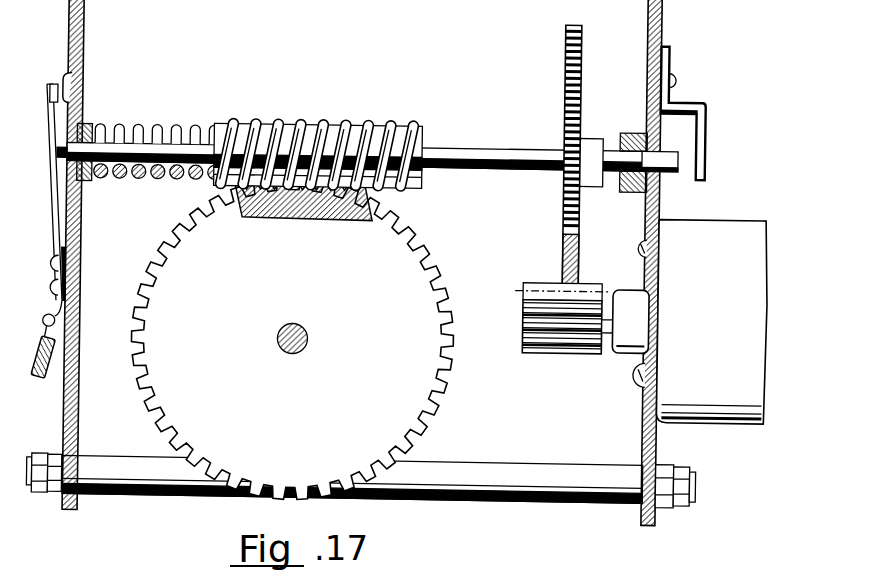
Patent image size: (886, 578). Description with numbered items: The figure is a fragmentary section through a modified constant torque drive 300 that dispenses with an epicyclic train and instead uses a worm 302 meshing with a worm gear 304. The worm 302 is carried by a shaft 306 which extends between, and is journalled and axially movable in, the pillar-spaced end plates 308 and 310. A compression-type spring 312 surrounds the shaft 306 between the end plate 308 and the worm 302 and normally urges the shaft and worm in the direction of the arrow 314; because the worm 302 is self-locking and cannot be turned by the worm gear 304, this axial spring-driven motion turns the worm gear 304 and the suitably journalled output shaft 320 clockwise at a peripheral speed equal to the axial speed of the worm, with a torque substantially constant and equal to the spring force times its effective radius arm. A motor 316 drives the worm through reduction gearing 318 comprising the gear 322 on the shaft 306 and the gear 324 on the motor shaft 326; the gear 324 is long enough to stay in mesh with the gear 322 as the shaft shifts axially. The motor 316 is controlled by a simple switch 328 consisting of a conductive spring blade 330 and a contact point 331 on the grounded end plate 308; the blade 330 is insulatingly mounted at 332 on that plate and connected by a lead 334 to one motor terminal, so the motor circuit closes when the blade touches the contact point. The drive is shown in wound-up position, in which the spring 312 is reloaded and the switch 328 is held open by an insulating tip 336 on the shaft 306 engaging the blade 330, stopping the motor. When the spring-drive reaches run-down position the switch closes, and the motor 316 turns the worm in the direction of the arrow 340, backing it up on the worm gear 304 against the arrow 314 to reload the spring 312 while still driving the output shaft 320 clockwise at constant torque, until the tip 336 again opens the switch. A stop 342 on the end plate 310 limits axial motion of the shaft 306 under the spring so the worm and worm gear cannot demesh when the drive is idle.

The constant torque drive 300 is at (439, 99).
The worm 302 is at (316, 138).
The worm gear 304 is at (425, 298).
The shaft 306 is at (446, 154).
The end plate 308 is at (79, 348).
The end plate 310 is at (659, 441).
The compression-type spring 312 is at (143, 134).
The arrow 314 is at (307, 109).
The motor 316 is at (702, 226).
The reduction gearing 318 is at (562, 278).
The output shaft 320 is at (298, 331).
The gear 322 is at (577, 246).
The gear 324 is at (569, 338).
The motor shaft 326 is at (608, 305).
The switch 328 is at (52, 85).
The conductive spring blade 330 is at (51, 165).
The contact point 331 is at (62, 90).
The insulating mounting 332 is at (62, 272).
The lead 334 is at (42, 368).
The insulating tip 336 is at (60, 128).
The arrow 340 is at (505, 161).
The stop 342 is at (700, 119).